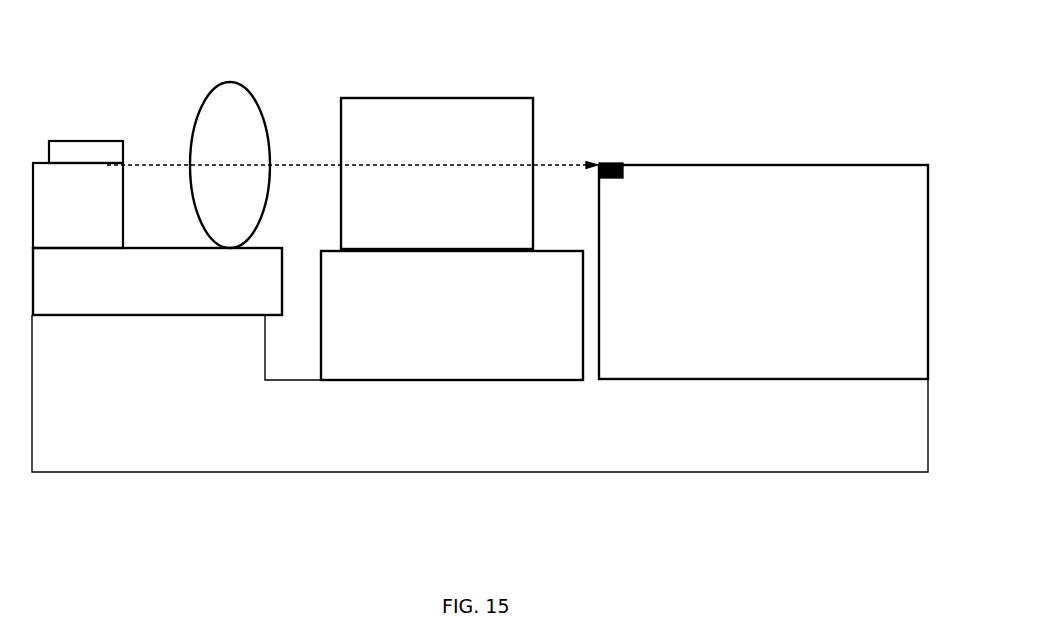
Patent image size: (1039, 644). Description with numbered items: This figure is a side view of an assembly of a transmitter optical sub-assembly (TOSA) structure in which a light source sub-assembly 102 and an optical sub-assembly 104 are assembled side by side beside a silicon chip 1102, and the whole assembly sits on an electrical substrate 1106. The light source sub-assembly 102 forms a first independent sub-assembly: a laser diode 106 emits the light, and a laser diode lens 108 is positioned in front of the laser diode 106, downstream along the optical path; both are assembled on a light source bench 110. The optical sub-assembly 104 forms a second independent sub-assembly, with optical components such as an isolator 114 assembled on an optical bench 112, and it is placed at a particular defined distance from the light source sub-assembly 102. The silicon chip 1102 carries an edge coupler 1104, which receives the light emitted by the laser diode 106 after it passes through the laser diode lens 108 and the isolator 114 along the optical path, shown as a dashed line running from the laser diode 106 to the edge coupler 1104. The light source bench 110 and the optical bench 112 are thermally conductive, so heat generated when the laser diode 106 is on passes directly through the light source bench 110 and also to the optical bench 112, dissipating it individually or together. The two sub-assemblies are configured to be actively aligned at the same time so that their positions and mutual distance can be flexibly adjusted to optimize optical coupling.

The light source sub-assembly 102 is at (163, 109).
The optical sub-assembly 104 is at (556, 68).
The laser diode 106 is at (81, 144).
The laser diode lens 108 is at (228, 108).
The light source bench 110 is at (170, 280).
The optical bench 112 is at (472, 354).
The isolator 114 is at (402, 123).
The silicon chip 1102 is at (753, 354).
The edge coupler 1104 is at (607, 152).
The electrical substrate 1106 is at (109, 482).